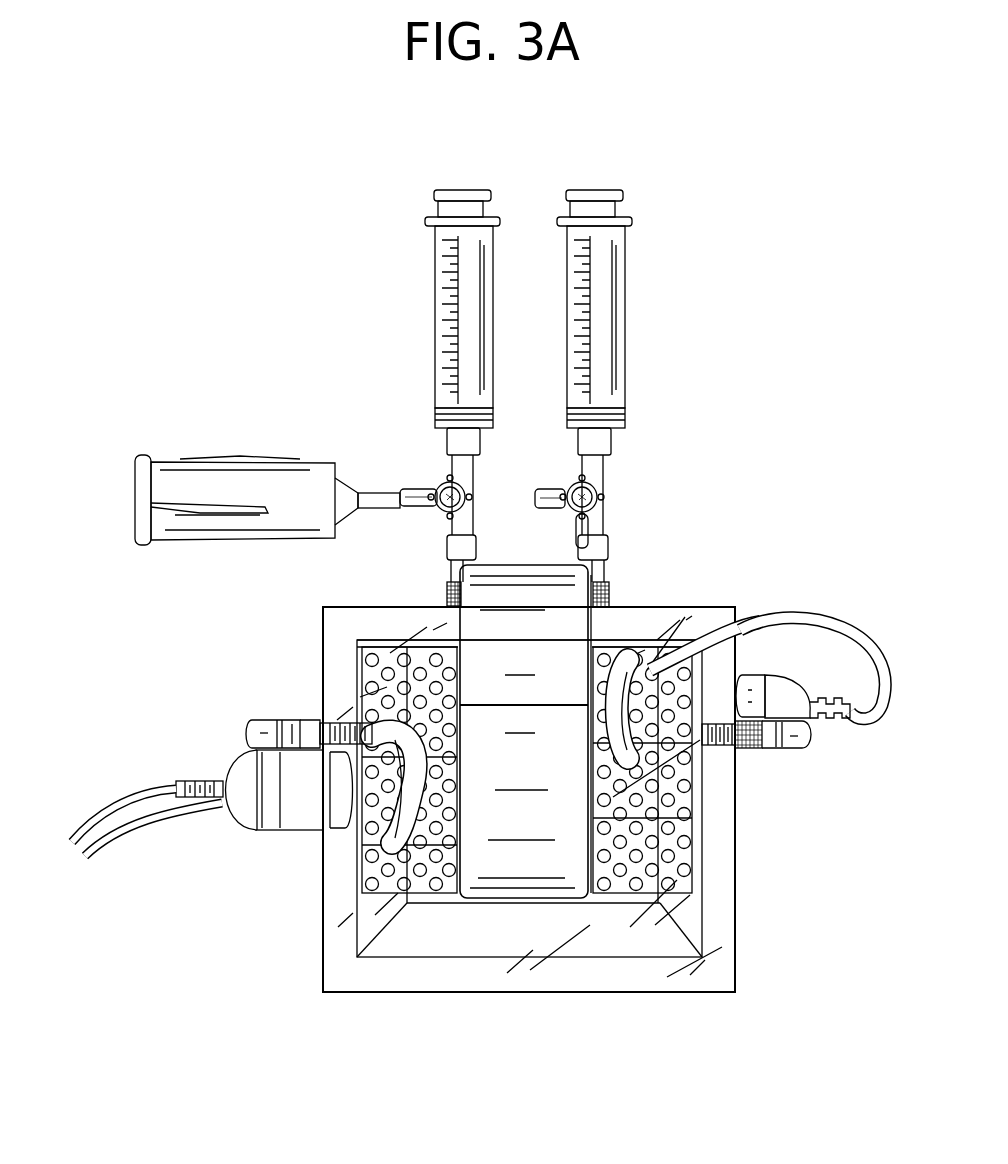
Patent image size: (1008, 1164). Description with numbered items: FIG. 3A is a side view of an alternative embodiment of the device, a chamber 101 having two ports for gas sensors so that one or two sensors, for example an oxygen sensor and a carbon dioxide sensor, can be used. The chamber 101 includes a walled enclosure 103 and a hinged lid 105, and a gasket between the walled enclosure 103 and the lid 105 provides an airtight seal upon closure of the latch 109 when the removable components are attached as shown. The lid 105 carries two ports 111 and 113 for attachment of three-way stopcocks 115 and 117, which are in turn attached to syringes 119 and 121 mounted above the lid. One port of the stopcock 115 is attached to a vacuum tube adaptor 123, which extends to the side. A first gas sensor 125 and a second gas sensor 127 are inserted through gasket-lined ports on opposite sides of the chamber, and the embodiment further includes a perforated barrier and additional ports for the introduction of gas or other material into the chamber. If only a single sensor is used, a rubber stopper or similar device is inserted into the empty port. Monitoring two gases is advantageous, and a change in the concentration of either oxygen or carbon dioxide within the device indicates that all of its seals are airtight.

The chamber 101 is at (768, 789).
The walled enclosure 103 is at (720, 890).
The hinged lid 105 is at (333, 627).
The latch 109 is at (562, 812).
The port 111 is at (447, 595).
The port 113 is at (610, 592).
The three-way stopcock 115 is at (420, 481).
The three-way stopcock 117 is at (608, 478).
The syringe 119 is at (437, 322).
The syringe 121 is at (610, 340).
The vacuum tube adaptor 123 is at (300, 468).
The first gas sensor 125 is at (232, 765).
The second gas sensor 127 is at (770, 685).